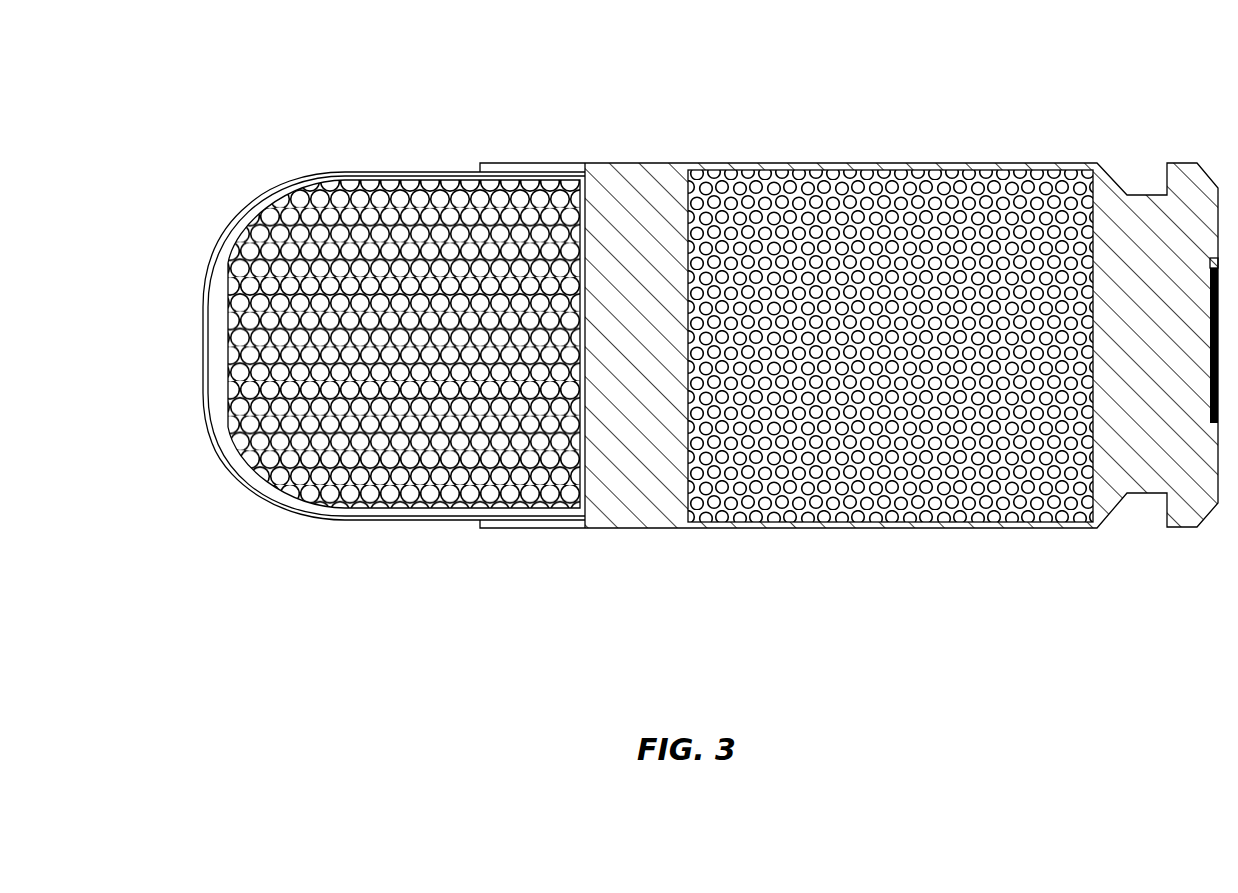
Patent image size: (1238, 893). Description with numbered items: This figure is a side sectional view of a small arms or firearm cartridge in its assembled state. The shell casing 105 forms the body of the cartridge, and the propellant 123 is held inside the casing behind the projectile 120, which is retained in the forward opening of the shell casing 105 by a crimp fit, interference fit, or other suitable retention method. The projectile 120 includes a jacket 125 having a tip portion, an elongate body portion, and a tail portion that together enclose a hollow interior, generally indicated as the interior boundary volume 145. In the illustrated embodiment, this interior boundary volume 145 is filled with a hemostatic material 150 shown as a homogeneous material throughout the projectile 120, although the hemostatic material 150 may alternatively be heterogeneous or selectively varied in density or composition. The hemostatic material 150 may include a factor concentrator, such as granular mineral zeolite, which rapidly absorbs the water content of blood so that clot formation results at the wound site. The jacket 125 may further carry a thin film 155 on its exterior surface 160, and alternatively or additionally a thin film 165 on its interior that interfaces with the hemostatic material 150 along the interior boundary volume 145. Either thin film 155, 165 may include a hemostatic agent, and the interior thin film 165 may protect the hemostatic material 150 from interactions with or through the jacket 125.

The projectile 120 is at (290, 140).
The shell casing 105 is at (667, 185).
The propellant 123 is at (790, 180).
The jacket 125 is at (258, 215).
The interior boundary volume 145 is at (418, 176).
The hemostatic material 150 is at (444, 492).
The thin film 155 is at (222, 447).
The exterior surface 160 is at (207, 284).
The thin film 165 is at (282, 490).